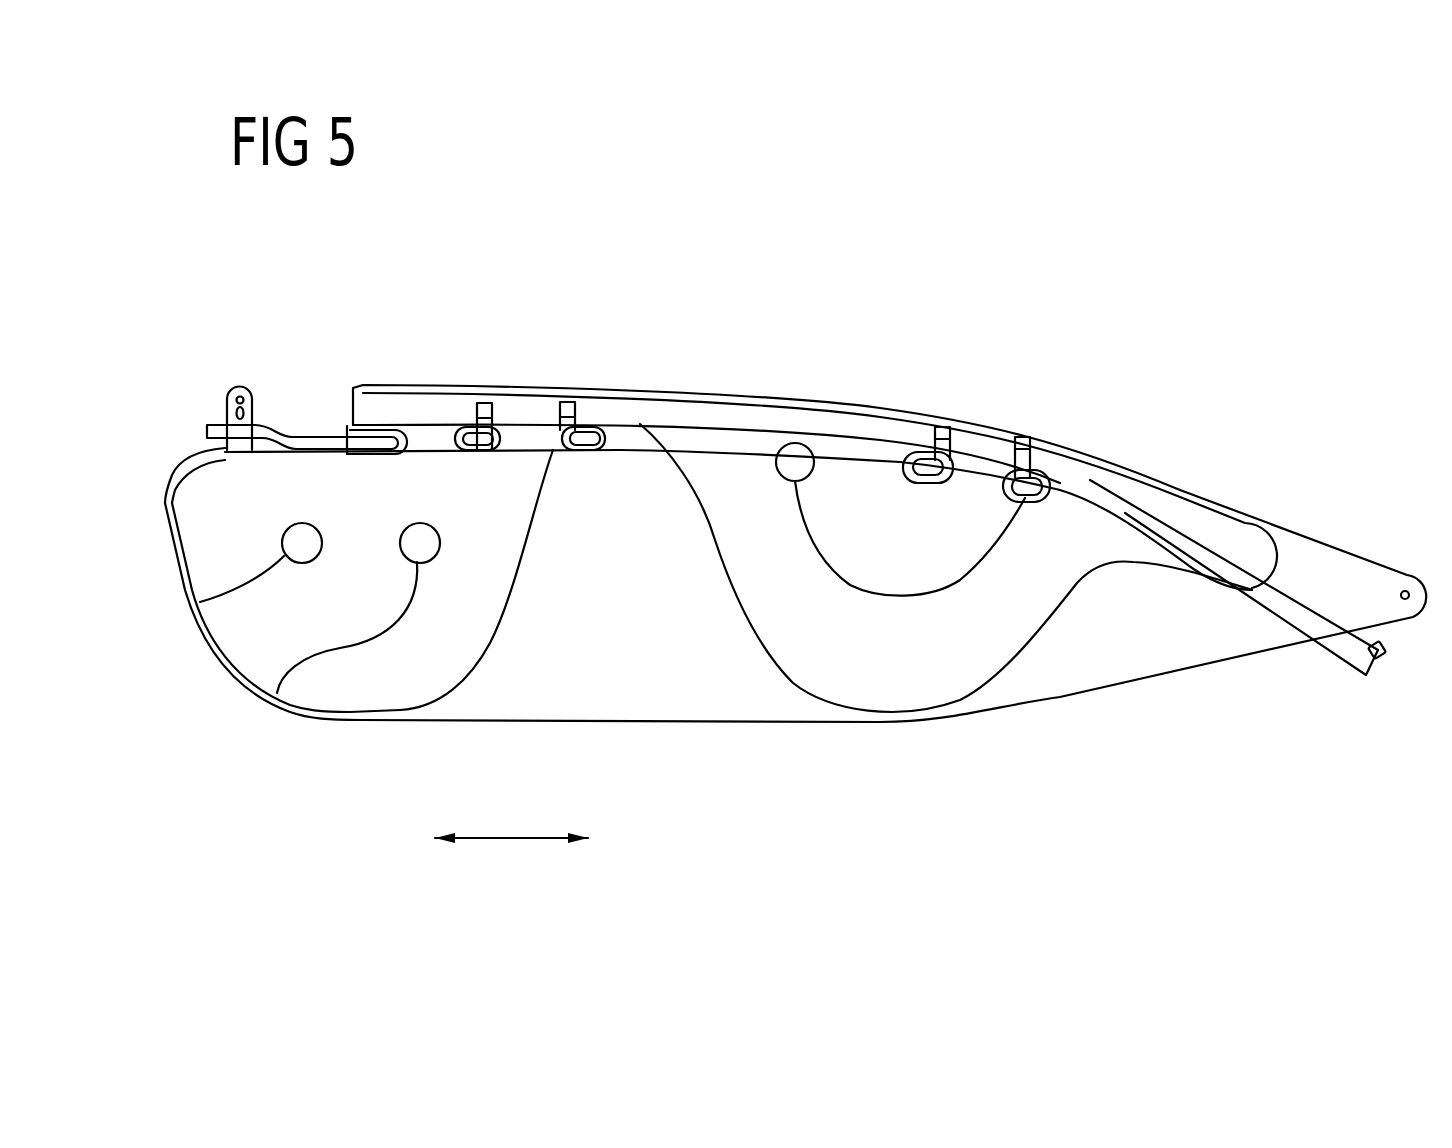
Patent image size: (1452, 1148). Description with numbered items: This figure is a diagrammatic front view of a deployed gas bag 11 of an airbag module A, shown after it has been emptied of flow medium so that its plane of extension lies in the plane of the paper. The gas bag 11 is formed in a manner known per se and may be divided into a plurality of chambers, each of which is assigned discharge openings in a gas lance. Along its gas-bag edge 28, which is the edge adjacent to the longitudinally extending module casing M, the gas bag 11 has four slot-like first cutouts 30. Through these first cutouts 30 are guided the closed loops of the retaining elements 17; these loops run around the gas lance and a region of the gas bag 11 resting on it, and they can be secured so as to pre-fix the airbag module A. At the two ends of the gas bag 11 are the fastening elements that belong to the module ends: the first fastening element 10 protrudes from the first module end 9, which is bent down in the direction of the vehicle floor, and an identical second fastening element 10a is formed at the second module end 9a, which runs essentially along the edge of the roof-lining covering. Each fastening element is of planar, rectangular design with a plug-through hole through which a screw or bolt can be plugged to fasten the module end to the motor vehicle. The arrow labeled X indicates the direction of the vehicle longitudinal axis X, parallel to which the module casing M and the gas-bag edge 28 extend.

The first module end 9 is at (1308, 613).
The second module end 9a is at (287, 428).
The first fastening element 10 is at (1380, 657).
The second fastening element 10a is at (219, 402).
The gas bag 11 is at (663, 682).
The retaining elements 17 is at (480, 405).
The gas-bag edge 28 is at (757, 395).
The first cutouts 30 is at (458, 433).
The module casing M is at (1113, 487).
The airbag module A is at (1177, 528).
The vehicle longitudinal axis X is at (511, 823).